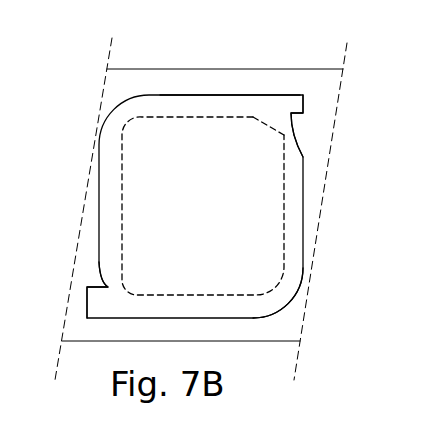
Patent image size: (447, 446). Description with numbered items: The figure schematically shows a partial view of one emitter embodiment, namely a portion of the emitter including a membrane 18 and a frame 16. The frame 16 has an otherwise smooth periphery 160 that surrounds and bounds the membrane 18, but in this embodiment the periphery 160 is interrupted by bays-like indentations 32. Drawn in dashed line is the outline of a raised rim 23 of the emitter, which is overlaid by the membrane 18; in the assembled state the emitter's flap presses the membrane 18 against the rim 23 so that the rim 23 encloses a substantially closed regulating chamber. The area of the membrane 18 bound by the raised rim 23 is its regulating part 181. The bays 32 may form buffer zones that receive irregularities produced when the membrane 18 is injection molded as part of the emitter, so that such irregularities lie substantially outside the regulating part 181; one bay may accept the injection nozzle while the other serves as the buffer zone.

The frame 16 is at (137, 88).
The membrane 18 is at (193, 103).
The raised rim 23 is at (252, 117).
The bays-like indentations 32 is at (279, 108).
The regulating part 181 is at (140, 193).
The periphery 160 is at (283, 267).